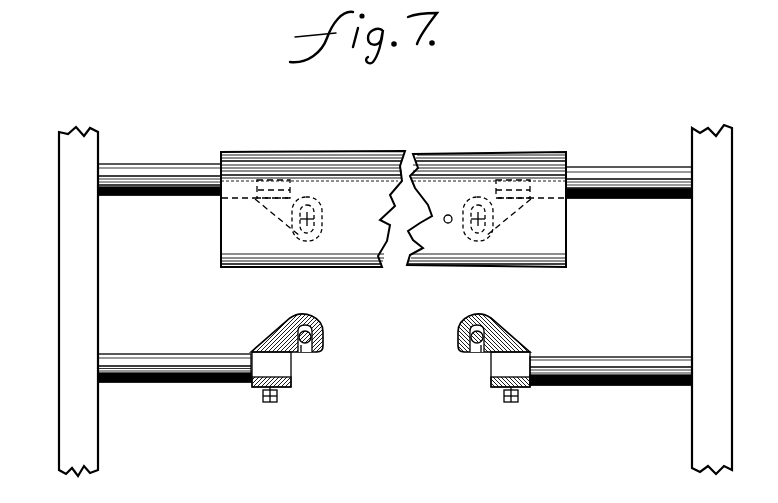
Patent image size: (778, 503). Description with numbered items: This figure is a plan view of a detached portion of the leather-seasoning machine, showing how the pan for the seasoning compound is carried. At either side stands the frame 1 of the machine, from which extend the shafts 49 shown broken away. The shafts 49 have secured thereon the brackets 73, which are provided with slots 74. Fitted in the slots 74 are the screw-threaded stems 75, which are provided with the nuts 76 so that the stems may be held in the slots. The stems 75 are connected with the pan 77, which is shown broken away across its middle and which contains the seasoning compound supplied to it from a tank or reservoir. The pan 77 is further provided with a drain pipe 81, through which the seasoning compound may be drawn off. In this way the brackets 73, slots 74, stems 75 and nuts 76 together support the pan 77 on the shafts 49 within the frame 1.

The frame 1 is at (390, 300).
The shaft 49 is at (136, 175).
The bracket 73 is at (275, 235).
The slot 74 is at (308, 352).
The screw-threaded stem 75 is at (308, 241).
The nut 76 is at (302, 352).
The pan 77 is at (393, 209).
The drain pipe 81 is at (448, 223).